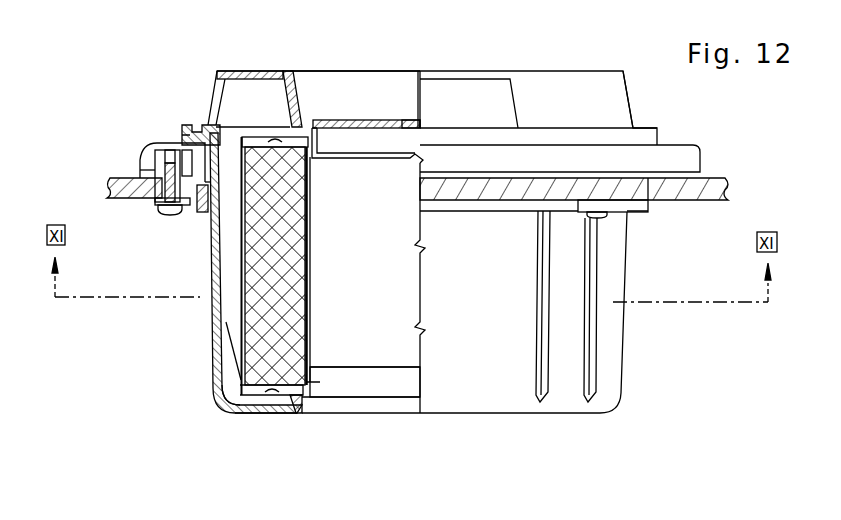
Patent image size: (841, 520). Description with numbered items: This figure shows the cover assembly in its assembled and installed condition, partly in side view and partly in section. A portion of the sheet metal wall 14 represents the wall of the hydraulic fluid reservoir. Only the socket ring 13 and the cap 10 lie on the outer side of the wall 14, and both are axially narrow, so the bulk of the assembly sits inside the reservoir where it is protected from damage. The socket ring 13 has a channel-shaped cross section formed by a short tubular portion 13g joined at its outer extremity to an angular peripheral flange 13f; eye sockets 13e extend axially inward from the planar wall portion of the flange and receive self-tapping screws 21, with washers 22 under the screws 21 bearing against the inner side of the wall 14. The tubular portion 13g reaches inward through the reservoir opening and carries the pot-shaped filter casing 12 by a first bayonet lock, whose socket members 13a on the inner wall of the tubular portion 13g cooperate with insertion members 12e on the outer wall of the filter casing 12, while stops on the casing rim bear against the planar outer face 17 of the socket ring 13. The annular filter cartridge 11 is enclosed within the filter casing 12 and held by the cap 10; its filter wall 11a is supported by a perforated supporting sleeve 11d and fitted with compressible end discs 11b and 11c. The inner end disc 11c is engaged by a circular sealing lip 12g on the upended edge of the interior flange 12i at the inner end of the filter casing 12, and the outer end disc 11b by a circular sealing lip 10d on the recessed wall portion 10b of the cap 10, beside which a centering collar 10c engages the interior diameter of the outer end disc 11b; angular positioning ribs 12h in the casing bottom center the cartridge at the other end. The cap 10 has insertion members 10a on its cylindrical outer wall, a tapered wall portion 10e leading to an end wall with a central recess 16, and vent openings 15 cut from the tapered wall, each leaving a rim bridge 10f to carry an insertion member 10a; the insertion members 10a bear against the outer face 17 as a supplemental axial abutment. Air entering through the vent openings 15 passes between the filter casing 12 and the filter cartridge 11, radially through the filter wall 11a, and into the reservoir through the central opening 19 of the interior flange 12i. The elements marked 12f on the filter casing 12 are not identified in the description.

The cap 10 is at (603, 72).
The insertion members 10a is at (195, 128).
The recessed wall portion 10b is at (405, 124).
The centering collar 10c is at (318, 153).
The circular sealing lip 10d is at (297, 123).
The tapered wall portion 10e is at (608, 108).
The rim bridge 10f is at (187, 137).
The filter cartridge 11 is at (243, 330).
The filter wall 11a is at (297, 305).
The outer end disc 11b is at (258, 140).
The inner end disc 11c is at (305, 395).
The perforated supporting sleeve 11d is at (308, 263).
The filter casing 12 is at (627, 370).
The insertion members 12e is at (199, 213).
The housing side wall / legs 12f is at (211, 352).
The circular sealing lip 12g is at (297, 404).
The angular positioning ribs 12h is at (221, 399).
The interior flange 12i is at (250, 414).
The socket ring 13 is at (697, 147).
The socket members 13a is at (232, 298).
The eye sockets 13e is at (163, 167).
The angular peripheral flange 13f is at (570, 163).
The tubular portion 13g is at (493, 210).
The sheet metal wall 14 is at (717, 183).
The vent opening 15 is at (238, 100).
The central recess 16 is at (380, 102).
The planar outer face 17 is at (185, 142).
The central opening 19 is at (383, 412).
The self-tapping screws 21 is at (165, 208).
The washers 22 is at (152, 200).